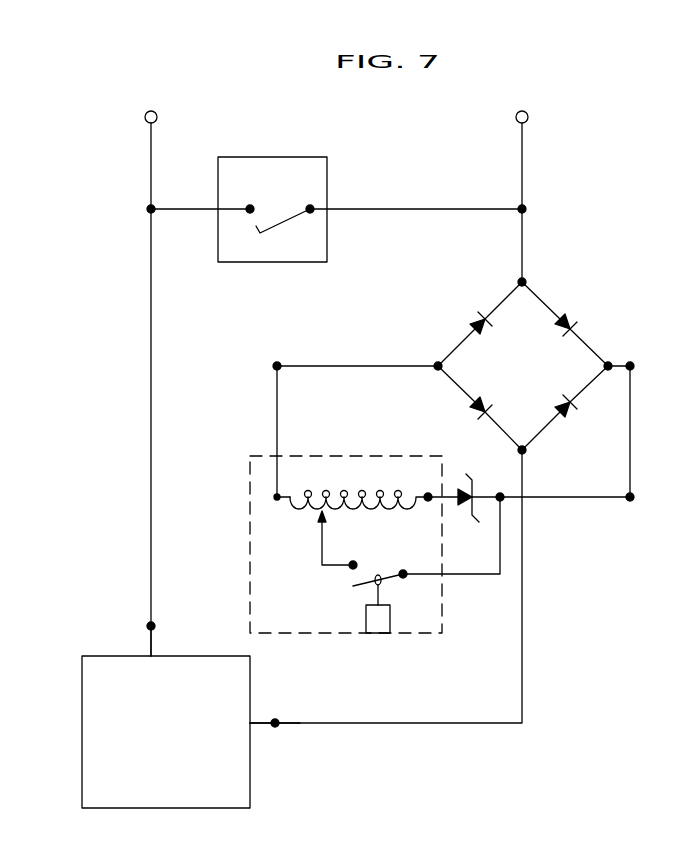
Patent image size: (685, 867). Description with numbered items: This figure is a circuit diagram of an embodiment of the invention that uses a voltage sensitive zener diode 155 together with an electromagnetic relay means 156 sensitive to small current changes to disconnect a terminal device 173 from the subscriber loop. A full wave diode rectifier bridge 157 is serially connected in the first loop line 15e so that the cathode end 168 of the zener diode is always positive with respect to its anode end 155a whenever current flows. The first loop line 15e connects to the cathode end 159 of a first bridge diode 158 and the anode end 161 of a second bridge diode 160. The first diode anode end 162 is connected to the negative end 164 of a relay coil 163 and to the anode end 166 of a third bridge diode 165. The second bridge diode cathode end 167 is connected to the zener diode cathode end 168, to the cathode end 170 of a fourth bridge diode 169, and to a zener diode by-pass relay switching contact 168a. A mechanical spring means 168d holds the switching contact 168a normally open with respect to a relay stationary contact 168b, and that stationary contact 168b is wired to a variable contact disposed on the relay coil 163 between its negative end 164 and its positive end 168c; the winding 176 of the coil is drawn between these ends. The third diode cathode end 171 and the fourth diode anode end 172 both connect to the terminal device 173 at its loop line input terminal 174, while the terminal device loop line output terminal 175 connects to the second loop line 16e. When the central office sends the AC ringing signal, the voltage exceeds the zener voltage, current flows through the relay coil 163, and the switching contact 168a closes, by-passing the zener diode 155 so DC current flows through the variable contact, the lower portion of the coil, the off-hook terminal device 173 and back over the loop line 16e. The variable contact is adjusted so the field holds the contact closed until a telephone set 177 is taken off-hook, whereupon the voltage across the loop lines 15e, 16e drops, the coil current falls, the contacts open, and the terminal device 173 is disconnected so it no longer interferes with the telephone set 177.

The first loop line 15e is at (524, 234).
The second loop line 16e is at (151, 421).
The zener diode 155 is at (442, 483).
The anode end 155a is at (431, 491).
The electromagnetic relay means 156 is at (288, 452).
The full wave diode rectifier bridge 157 is at (597, 275).
The first bridge diode 158 is at (468, 309).
The cathode end 159 is at (488, 314).
The second bridge diode 160 is at (575, 324).
The anode end 161 is at (563, 332).
The first diode anode end 162 is at (477, 329).
The relay coil 163 is at (343, 502).
The relay coil negative end 164 is at (274, 494).
The third bridge diode 165 is at (465, 404).
The anode end 166 is at (483, 402).
The second bridge diode cathode end 167 is at (576, 322).
The zener diode cathode end 168 is at (477, 483).
The relay switching contact 168a is at (348, 586).
The relay stationary contact 168b is at (352, 563).
The relay coil positive end 168c is at (313, 511).
The mechanical spring means 168d is at (390, 621).
The fourth bridge diode 169 is at (592, 408).
The cathode end 170 is at (586, 397).
The third diode cathode end 171 is at (487, 414).
The fourth diode anode end 172 is at (566, 410).
The terminal device 173 is at (166, 732).
The loop line input terminal 174 is at (276, 720).
The terminal device loop line output terminal 175 is at (150, 624).
The coil winding 176 is at (366, 490).
The telephone set 177 is at (302, 157).